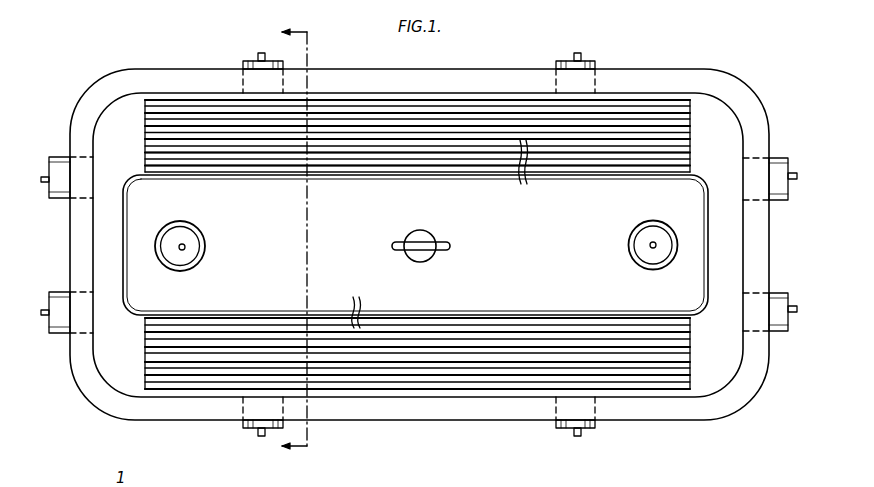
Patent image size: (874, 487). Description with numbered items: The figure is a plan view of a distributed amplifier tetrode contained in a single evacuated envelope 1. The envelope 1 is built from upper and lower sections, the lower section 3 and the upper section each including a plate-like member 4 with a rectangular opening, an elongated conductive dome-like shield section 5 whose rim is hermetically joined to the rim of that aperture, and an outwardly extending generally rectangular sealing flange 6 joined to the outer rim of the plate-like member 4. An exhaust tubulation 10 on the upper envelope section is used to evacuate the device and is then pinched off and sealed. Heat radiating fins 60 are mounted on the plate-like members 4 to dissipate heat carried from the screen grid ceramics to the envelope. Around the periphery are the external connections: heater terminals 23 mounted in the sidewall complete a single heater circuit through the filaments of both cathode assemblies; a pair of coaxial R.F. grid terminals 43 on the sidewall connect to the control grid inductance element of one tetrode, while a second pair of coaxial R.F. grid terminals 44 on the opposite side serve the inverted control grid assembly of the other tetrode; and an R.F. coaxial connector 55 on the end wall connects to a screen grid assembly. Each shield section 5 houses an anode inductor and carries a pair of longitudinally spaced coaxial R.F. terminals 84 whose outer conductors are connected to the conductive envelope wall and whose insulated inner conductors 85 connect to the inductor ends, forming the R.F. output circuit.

The envelope 1 is at (135, 62).
The lower section 3 is at (302, 240).
The plate-like member 4 is at (728, 113).
The shield section 5 is at (695, 184).
The sealing flange 6 is at (700, 70).
The exhaust tubulation 10 is at (410, 236).
The heater terminals 23 is at (795, 172).
The coaxial R.F. grid terminals 43 is at (259, 436).
The second pair of coaxial R.F. grid terminals 44 is at (258, 58).
The R.F. coaxial connector 55 is at (44, 178).
The heat radiating fins 60 is at (417, 244).
The coaxial R.F. terminals 84 is at (209, 237).
The inner conductors 85 is at (185, 250).